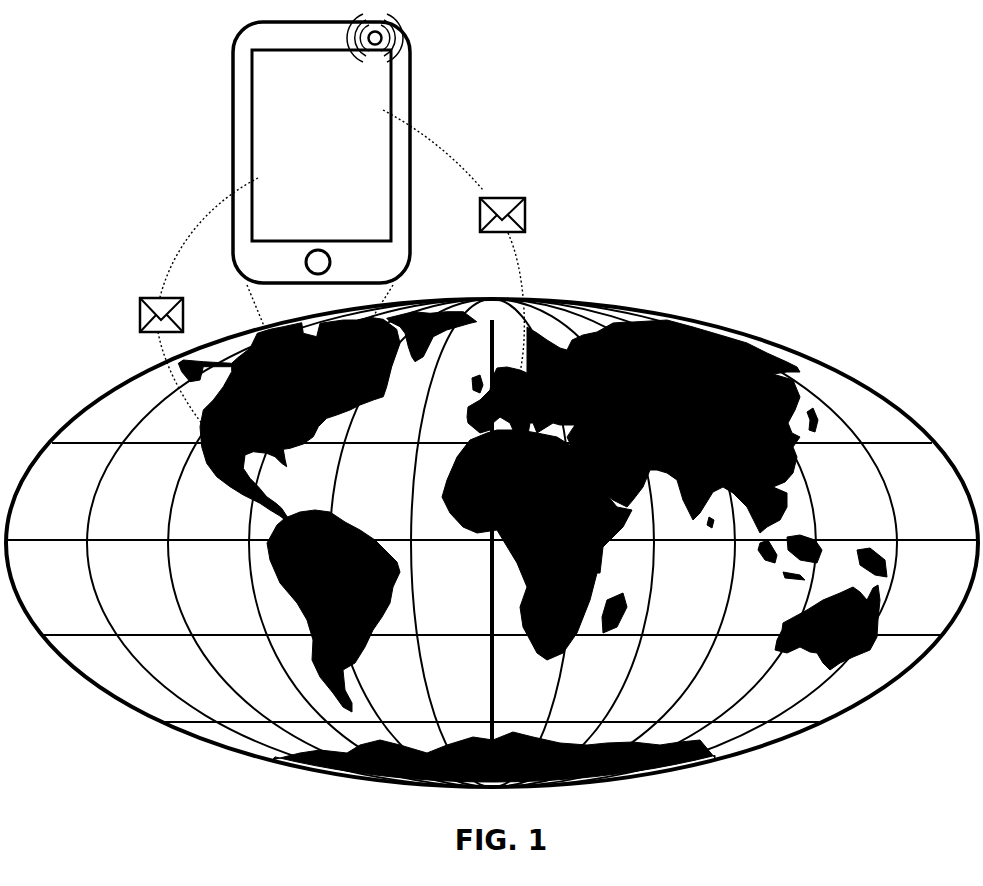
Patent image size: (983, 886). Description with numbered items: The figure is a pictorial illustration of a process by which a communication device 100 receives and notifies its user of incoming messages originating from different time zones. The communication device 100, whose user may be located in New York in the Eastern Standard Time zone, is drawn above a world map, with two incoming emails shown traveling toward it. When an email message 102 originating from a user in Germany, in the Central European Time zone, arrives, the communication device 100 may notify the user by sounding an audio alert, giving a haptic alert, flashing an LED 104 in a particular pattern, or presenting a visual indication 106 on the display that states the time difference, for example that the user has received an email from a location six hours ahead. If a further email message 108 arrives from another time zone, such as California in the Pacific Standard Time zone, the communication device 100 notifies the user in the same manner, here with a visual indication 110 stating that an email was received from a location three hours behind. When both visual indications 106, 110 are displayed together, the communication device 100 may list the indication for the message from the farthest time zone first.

The communication device 100 is at (232, 80).
The email message 102 is at (527, 212).
The LED 104 is at (385, 37).
The visual indication 106 is at (385, 100).
The email message 108 is at (140, 313).
The visual indication 110 is at (265, 168).